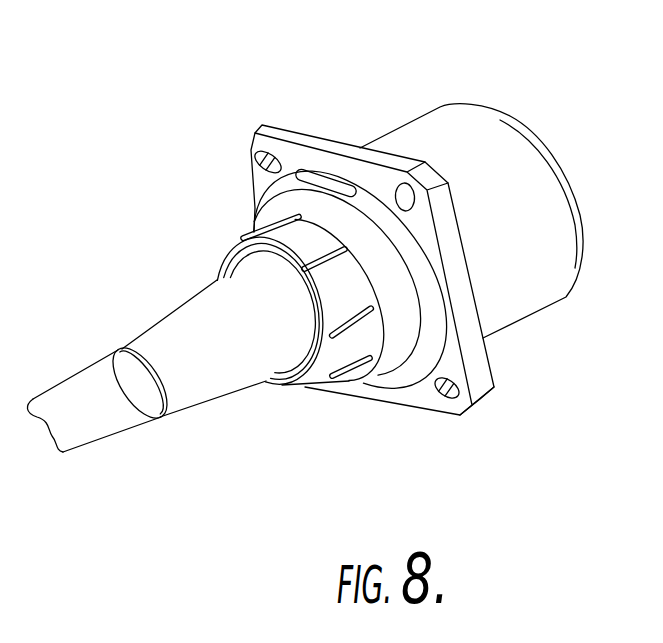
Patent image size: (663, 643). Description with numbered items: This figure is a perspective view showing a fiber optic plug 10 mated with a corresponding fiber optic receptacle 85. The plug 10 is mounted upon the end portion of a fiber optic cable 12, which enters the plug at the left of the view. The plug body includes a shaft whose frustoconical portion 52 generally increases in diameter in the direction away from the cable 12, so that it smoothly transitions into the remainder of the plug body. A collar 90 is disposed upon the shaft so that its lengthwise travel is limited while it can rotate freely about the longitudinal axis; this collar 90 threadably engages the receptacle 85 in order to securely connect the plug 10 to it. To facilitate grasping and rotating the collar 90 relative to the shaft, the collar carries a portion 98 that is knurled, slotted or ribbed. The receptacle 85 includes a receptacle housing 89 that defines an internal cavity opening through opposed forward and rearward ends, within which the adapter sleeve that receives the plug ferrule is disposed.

The fiber optic plug 10 is at (334, 271).
The fiber optic cable 12 is at (100, 415).
The frustoconical portion 52 is at (202, 332).
The fiber optic receptacle 85 is at (548, 324).
The receptacle housing 89 is at (432, 138).
The collar 90 is at (358, 347).
The knurled portion 98 is at (258, 221).